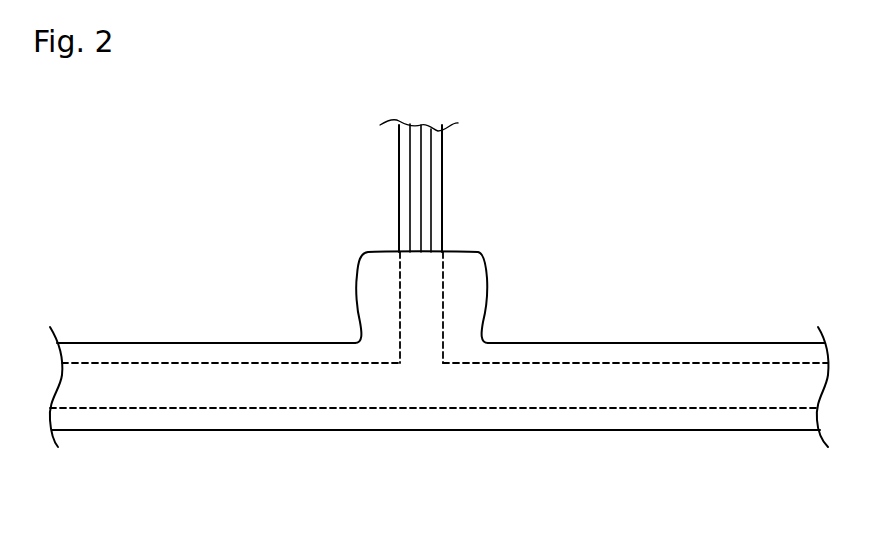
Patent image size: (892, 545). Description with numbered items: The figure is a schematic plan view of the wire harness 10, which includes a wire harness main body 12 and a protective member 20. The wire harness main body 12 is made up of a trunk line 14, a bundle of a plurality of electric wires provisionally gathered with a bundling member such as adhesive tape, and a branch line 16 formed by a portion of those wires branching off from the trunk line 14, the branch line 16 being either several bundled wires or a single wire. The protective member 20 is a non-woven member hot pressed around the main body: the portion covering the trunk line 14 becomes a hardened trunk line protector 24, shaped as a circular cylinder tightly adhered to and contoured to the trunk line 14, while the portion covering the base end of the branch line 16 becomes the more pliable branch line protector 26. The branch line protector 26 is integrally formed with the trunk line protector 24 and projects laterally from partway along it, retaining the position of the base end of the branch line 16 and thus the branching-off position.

The wire harness 10 is at (561, 261).
The wire harness main body 12 is at (448, 173).
The trunk line 14 is at (685, 363).
The branch line 16 is at (443, 222).
The protective member 20 is at (563, 433).
The trunk line protector 24 is at (620, 342).
The branch line protector 26 is at (488, 298).